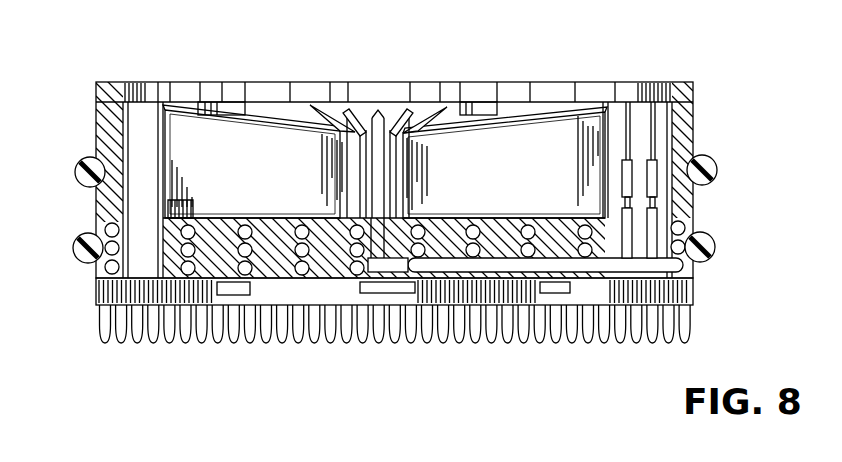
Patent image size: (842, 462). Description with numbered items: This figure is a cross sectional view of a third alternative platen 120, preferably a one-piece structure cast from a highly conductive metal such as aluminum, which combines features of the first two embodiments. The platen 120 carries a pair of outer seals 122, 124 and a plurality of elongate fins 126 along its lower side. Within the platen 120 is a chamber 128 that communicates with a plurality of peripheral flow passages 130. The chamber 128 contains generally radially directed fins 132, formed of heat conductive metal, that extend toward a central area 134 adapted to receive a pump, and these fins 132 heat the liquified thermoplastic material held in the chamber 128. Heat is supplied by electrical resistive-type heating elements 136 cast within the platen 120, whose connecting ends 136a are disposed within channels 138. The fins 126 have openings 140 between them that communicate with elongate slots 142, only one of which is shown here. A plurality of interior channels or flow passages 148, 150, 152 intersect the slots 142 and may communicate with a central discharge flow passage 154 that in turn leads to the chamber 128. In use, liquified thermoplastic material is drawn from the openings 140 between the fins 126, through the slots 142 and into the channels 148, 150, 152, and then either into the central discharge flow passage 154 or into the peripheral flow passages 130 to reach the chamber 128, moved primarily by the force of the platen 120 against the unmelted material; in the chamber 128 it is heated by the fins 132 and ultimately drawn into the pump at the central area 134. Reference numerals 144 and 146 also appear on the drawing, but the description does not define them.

The platen 120 is at (722, 65).
The outer seal 122 is at (716, 158).
The outer seal 124 is at (715, 240).
The elongate fins 126 is at (640, 344).
The chamber 128 is at (358, 101).
The flow passages 130 is at (143, 110).
The radially directed fins 132 is at (228, 166).
The central area 134 is at (369, 112).
The heating elements 136 is at (490, 218).
The connecting ends 136a is at (652, 158).
The channels 138 is at (213, 101).
The openings 140 is at (322, 338).
The elongate slots 142 is at (115, 293).
The elastomeric interconnect 144 is at (268, 285).
The side channel 146 is at (147, 270).
The interior channel 148 is at (403, 285).
The interior channel 150 is at (250, 306).
The interior channel 152 is at (555, 287).
The central discharge flow passage 154 is at (383, 232).